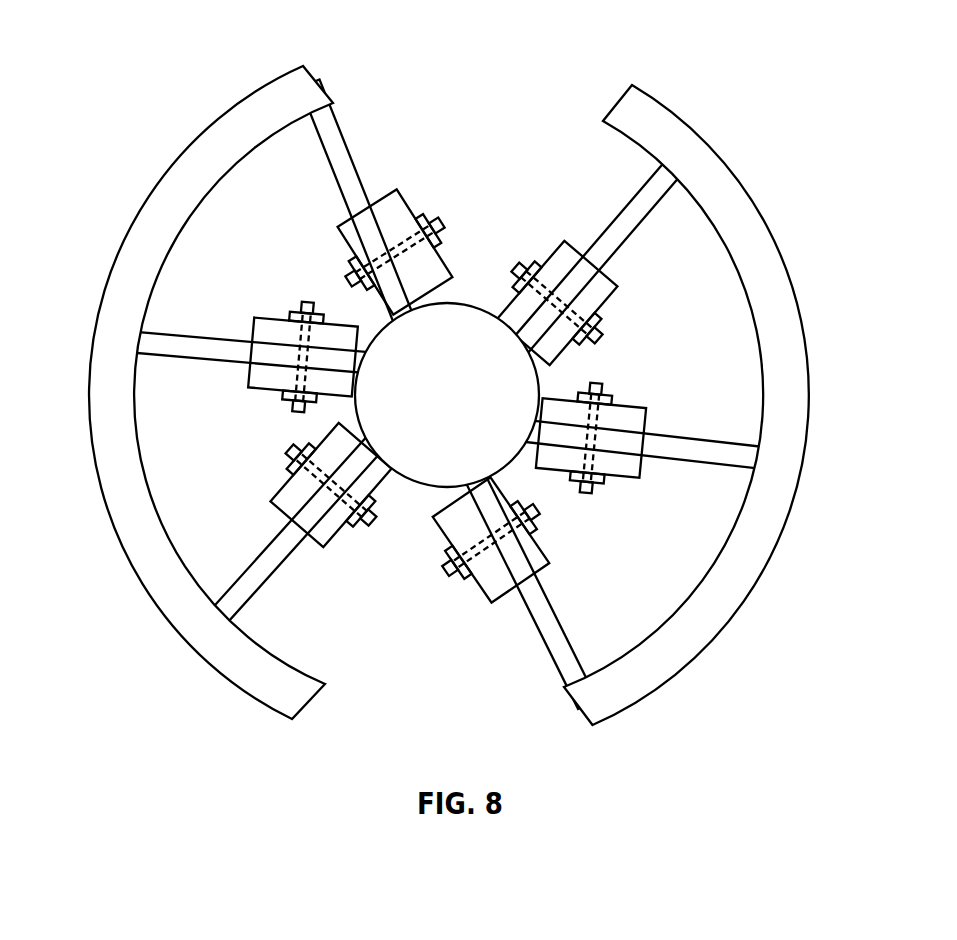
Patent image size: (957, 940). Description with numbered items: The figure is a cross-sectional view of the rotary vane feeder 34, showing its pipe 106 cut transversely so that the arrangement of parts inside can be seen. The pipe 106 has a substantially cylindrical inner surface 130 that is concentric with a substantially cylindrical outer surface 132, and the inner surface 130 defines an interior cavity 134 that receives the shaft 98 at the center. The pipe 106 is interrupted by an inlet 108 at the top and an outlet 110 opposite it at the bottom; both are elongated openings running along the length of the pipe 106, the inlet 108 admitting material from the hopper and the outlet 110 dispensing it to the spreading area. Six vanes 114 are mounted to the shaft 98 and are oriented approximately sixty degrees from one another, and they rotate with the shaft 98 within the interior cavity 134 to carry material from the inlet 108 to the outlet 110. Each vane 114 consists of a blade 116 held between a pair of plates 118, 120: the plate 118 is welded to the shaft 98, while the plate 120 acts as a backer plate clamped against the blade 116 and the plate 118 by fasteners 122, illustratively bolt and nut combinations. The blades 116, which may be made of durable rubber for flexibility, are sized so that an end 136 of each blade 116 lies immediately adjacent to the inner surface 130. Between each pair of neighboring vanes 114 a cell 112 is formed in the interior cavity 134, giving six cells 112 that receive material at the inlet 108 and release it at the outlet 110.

The feeder 34 is at (210, 98).
The shaft 98 is at (458, 407).
The pipe 106 is at (697, 150).
The inlet 108 is at (579, 66).
The outlet 110 is at (583, 741).
The cell 112 is at (437, 395).
The vane 114 is at (445, 394).
The blade 116 is at (362, 216).
The plate 118 is at (398, 306).
The plate 120 is at (395, 252).
The fastener 122 is at (394, 252).
The inner surface 130 is at (708, 224).
The outer surface 132 is at (793, 280).
The interior cavity 134 is at (379, 125).
The end 136 is at (135, 344).